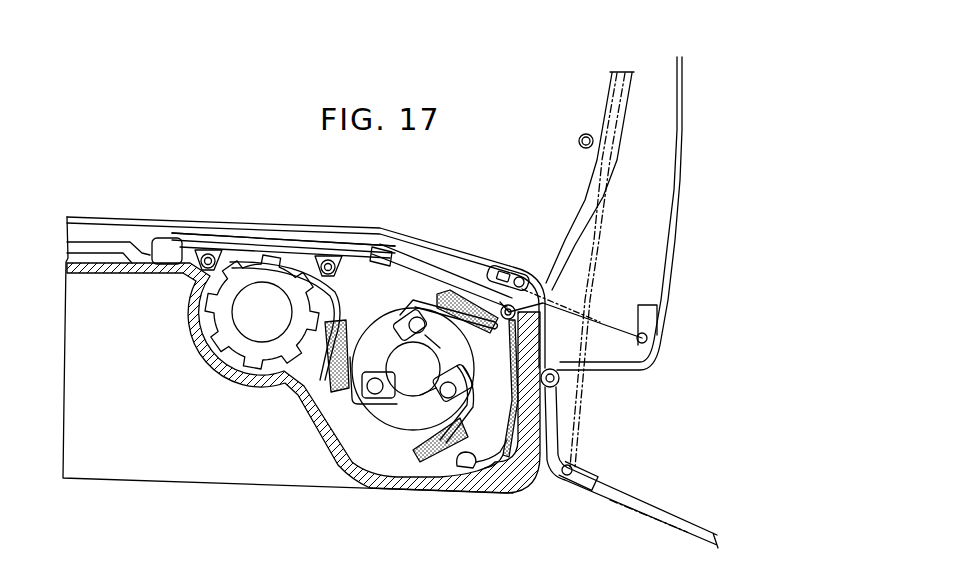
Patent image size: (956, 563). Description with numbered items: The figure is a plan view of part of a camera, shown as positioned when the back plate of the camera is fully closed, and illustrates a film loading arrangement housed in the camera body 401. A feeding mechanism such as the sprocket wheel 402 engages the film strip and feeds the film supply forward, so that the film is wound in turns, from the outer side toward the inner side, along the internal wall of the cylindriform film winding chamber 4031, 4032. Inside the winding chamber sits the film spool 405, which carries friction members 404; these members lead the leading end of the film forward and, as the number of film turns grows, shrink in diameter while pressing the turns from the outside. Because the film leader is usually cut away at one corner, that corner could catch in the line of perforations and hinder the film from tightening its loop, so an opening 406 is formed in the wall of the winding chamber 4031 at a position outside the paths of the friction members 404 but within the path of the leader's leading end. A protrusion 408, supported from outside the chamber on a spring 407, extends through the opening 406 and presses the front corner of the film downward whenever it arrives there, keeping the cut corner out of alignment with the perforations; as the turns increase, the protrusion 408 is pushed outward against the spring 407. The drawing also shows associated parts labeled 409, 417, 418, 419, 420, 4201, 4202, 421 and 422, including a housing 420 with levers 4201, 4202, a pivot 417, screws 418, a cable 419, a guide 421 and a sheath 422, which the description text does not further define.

The camera body 401 is at (133, 478).
The sprocket wheel 402 is at (246, 313).
The film winding chamber 4031 is at (333, 428).
The film winding chamber 4032 is at (410, 266).
The friction members 404 is at (432, 462).
The film spool 405 is at (393, 413).
The opening 406 is at (495, 435).
The spring 407 is at (505, 465).
The protrusion 408 is at (473, 467).
The pad 409 is at (347, 322).
The pivot pin 417 is at (537, 300).
The screw 418 is at (328, 258).
The cable 419 is at (232, 243).
The housing 420 is at (463, 258).
The upper lever 4201 is at (682, 220).
The lower lever 4202 is at (600, 503).
The guide 421 is at (371, 250).
The sheath 422 is at (378, 264).